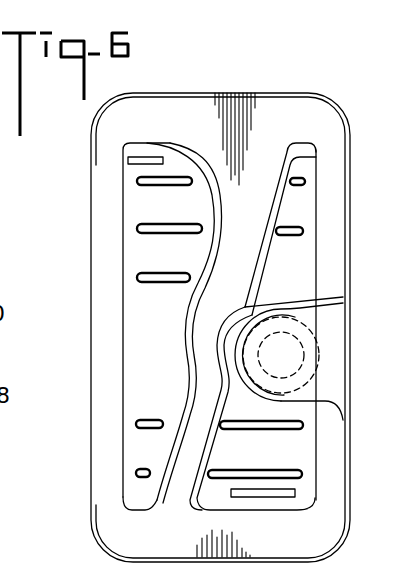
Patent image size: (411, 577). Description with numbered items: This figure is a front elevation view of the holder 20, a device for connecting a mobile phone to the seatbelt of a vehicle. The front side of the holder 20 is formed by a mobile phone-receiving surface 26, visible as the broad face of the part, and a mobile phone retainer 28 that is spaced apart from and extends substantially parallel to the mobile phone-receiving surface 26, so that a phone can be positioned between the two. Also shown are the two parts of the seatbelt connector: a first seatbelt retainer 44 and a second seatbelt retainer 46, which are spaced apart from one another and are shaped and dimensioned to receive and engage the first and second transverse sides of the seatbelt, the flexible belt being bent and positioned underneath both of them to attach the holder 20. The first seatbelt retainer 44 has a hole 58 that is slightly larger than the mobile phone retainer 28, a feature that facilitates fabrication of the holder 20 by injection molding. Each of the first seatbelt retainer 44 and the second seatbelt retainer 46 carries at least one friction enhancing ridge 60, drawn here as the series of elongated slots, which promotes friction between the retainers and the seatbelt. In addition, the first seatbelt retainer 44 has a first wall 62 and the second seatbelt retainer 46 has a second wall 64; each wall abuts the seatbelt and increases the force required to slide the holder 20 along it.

The holder 20 is at (352, 90).
The mobile phone-receiving surface 26 is at (298, 133).
The mobile phone retainer 28 is at (312, 360).
The first seatbelt retainer 44 is at (343, 423).
The second seatbelt retainer 46 is at (153, 333).
The hole 58 is at (297, 320).
The friction enhancing ridge 60 is at (152, 275).
The first wall 62 is at (277, 494).
The second wall 64 is at (148, 163).